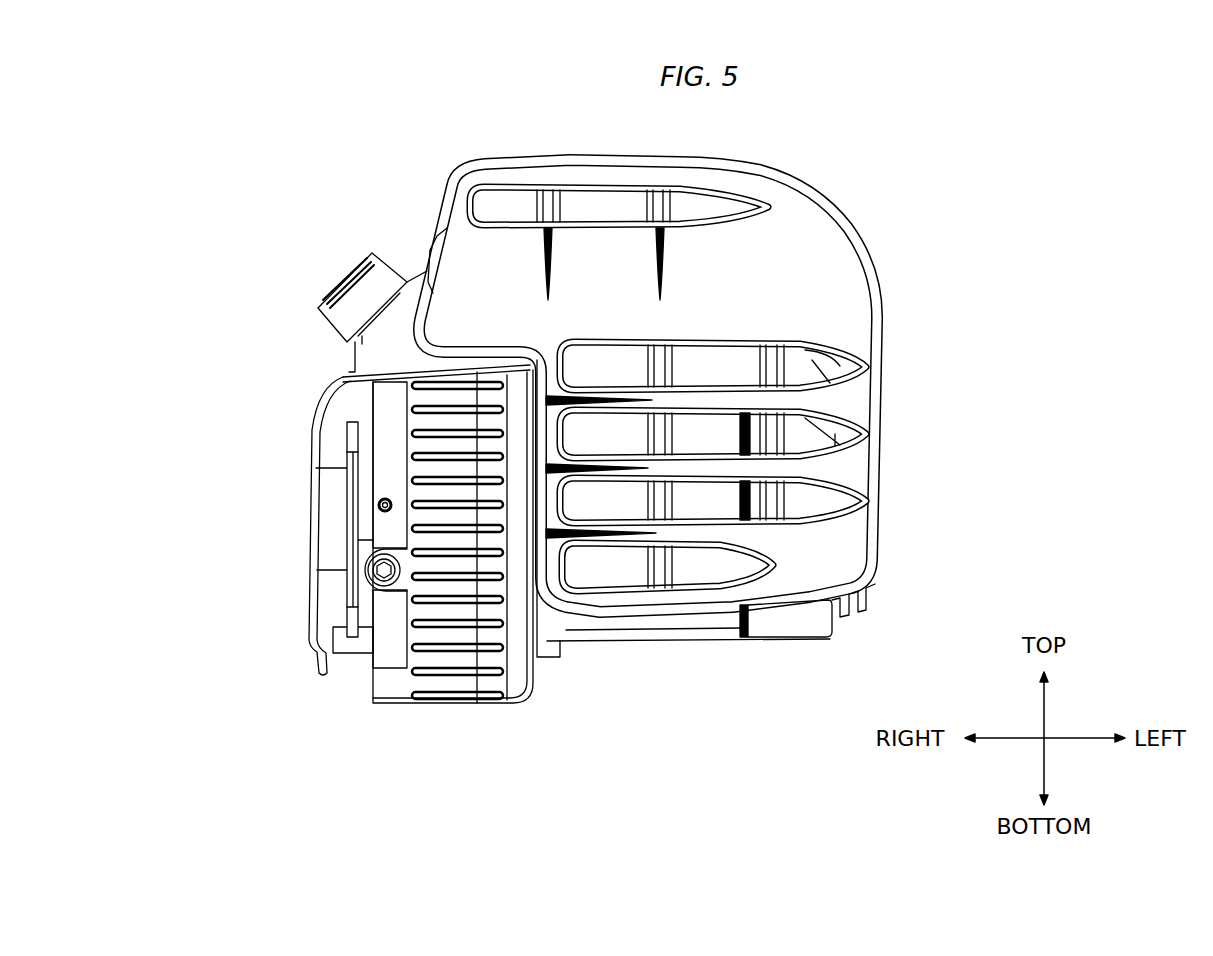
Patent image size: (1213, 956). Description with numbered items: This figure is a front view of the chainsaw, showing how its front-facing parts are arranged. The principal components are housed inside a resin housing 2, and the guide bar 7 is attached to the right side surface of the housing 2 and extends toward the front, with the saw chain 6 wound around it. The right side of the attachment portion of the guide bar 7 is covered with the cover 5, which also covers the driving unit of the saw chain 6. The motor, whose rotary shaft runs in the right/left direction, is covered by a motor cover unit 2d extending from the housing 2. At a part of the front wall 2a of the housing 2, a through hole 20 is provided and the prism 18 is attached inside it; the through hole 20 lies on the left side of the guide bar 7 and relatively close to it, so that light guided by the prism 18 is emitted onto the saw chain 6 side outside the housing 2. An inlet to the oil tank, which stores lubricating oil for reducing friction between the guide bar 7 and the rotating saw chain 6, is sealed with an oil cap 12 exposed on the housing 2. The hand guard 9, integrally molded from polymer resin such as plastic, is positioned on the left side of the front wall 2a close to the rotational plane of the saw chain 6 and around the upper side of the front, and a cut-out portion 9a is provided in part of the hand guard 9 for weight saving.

The housing 2 is at (404, 685).
The front wall 2a is at (390, 442).
The motor cover unit 2d is at (357, 546).
The cover 5 is at (311, 647).
The saw chain 6 is at (352, 443).
The guide bar 7 is at (353, 587).
The hand guard 9 is at (800, 253).
The cut-out portion 9a is at (835, 384).
The oil cap 12 is at (373, 262).
The prism 18 is at (378, 503).
The through hole 20 is at (379, 511).